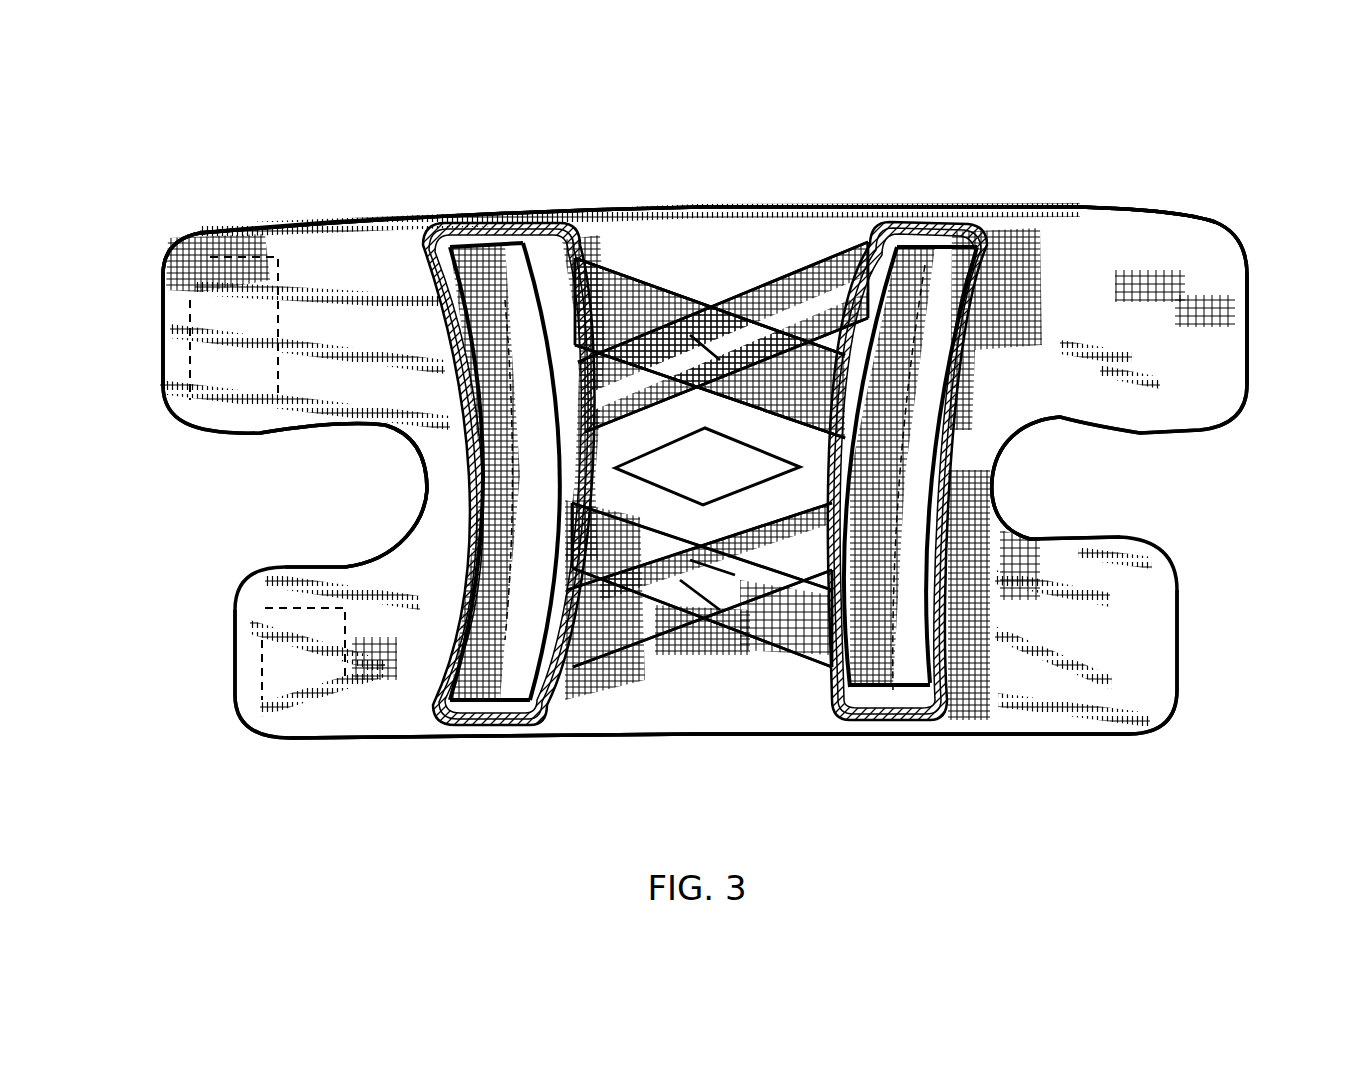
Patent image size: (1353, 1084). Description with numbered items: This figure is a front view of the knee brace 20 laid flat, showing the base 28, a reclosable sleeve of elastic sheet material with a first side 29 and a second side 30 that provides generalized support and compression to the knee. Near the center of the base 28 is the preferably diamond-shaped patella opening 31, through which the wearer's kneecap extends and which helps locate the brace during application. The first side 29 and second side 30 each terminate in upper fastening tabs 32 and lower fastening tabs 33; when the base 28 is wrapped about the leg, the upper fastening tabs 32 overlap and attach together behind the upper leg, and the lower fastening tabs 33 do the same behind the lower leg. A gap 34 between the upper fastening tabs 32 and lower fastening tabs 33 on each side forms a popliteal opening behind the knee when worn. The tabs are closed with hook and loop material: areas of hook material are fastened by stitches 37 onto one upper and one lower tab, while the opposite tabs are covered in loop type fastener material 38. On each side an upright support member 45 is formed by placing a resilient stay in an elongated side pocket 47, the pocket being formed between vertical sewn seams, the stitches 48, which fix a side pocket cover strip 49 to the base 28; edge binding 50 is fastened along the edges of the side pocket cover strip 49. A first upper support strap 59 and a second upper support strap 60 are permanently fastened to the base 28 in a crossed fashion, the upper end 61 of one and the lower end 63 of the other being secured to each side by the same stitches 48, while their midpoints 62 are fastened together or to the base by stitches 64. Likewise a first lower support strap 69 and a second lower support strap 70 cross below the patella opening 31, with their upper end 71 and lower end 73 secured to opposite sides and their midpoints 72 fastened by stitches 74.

The knee brace 20 is at (1110, 808).
The base 28 is at (865, 235).
The first side 29 is at (370, 335).
The second side 30 is at (1037, 335).
The patella opening 31 is at (700, 488).
The upper fastening tabs 32 is at (1180, 257).
The lower fastening tabs 33 is at (1133, 652).
The gap 34 is at (992, 484).
The stitches 37 is at (263, 680).
The loop type fastener material 38 is at (1063, 625).
The upright support members 45 is at (875, 597).
The elongated side pocket 47 is at (907, 578).
The stitches 48 is at (960, 722).
The side pocket cover strip 49 is at (920, 397).
The edge binding 50 is at (913, 720).
The first upper support strap 59 is at (640, 325).
The second upper support strap 60 is at (753, 320).
The upper end 61 is at (843, 235).
The midpoint 62 is at (713, 365).
The lower end 63 is at (797, 400).
The stitches 64 is at (680, 325).
The first lower support strap 69 is at (660, 600).
The second lower support strap 70 is at (745, 560).
The upper end 71 is at (810, 547).
The midpoint 72 is at (698, 583).
The lower end 73 is at (825, 650).
The stitches 74 is at (712, 560).